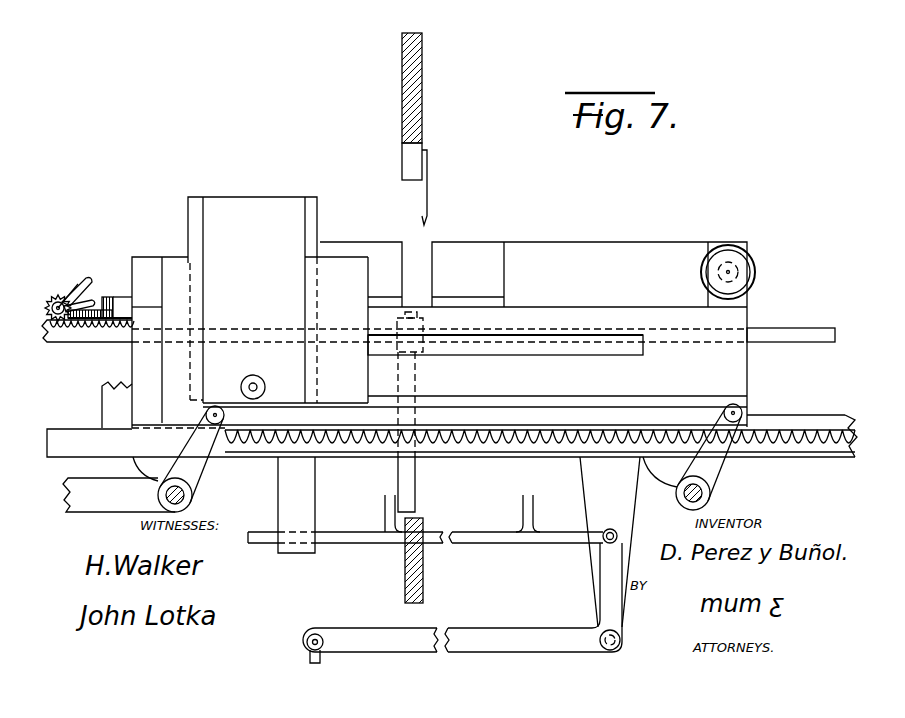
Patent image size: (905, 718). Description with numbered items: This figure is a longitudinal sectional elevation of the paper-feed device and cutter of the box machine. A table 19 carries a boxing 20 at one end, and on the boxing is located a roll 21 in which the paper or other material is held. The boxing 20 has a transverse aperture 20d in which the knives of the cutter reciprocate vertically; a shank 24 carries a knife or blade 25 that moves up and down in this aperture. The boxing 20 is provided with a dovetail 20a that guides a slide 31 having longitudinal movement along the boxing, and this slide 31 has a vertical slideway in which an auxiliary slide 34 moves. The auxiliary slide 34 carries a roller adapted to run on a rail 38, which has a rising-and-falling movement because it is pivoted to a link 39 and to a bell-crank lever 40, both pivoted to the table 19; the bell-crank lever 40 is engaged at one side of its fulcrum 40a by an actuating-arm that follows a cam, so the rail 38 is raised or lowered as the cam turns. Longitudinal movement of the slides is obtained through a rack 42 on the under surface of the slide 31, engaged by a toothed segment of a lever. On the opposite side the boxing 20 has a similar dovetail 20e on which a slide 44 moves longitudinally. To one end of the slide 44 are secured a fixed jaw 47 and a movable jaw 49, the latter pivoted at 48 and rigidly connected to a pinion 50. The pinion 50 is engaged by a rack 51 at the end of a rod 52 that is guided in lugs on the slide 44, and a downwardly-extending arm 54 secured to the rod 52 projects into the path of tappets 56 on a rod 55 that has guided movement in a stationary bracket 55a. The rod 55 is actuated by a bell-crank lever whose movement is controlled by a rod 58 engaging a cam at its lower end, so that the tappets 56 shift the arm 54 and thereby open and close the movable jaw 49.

The table 19 is at (451, 443).
The boxing 20 is at (120, 403).
The dovetail 20a is at (567, 317).
The transverse aperture 20d is at (423, 282).
The dovetail 20e is at (573, 348).
The roll 21 is at (728, 273).
The shank 24 is at (423, 88).
The knife 25 is at (428, 203).
The slide 31 is at (793, 403).
The auxiliary slide 34 is at (284, 277).
The rail 38 is at (439, 417).
The link 39 is at (708, 477).
The bell-crank lever 40 is at (178, 459).
The fulcrum 40a is at (192, 496).
The rack 42 is at (805, 440).
The slide 44 is at (118, 297).
The fixed jaw 47 is at (60, 300).
The pivot 48 is at (53, 297).
The movable jaw 49 is at (80, 292).
The pinion 50 is at (55, 320).
The rack 51 is at (87, 330).
The rod 52 is at (117, 336).
The downwardly-extending arm 54 is at (415, 392).
The rod 55 is at (378, 536).
The stationary bracket 55a is at (296, 505).
The tappet 56 is at (390, 505).
The rod 58 is at (323, 660).